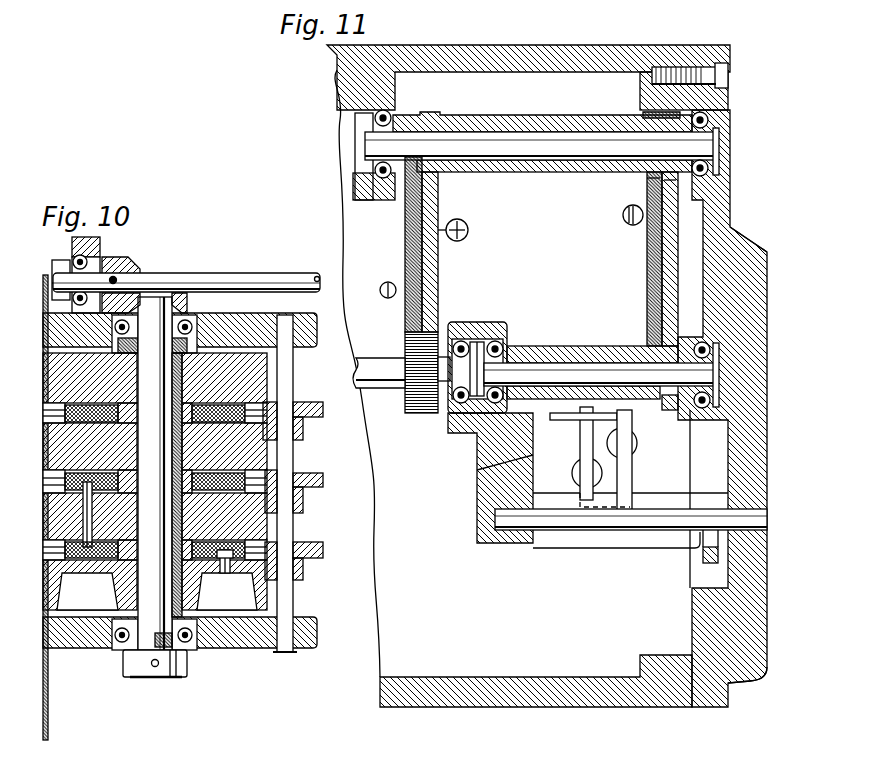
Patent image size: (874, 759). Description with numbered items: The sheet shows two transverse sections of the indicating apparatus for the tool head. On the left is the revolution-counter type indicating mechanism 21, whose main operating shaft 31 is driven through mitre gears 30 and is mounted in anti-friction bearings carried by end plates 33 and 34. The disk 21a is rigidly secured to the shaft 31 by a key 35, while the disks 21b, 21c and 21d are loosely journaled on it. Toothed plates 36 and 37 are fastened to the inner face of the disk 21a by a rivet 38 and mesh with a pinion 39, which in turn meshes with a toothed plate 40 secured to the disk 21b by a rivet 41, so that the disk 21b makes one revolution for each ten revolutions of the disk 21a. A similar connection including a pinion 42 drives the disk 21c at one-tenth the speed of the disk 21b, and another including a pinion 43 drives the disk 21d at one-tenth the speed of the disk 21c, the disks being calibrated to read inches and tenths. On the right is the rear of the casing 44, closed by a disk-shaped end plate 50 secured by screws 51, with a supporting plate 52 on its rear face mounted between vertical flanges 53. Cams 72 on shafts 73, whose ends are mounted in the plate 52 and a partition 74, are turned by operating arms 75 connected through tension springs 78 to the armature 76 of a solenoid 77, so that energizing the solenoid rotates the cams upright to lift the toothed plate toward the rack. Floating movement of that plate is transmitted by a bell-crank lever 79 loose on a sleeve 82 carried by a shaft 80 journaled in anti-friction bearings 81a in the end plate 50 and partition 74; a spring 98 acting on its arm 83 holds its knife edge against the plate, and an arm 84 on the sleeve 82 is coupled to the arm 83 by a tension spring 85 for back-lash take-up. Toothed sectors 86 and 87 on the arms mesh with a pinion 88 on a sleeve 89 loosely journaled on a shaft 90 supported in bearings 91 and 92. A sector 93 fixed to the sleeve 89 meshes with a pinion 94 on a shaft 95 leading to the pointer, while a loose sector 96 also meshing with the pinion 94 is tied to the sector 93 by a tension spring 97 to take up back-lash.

In FIG. 10, the indicating mechanism 21 is at (188, 268).
In FIG. 10, the mitre gears 30 is at (141, 264).
In FIG. 10, the end plate 34 is at (238, 323).
In FIG. 10, the end plate 33 is at (232, 647).
In FIG. 10, the disk 21a is at (56, 591).
In FIG. 10, the disk 21b is at (50, 519).
In FIG. 10, the disk 21c is at (56, 446).
In FIG. 10, the disk 21d is at (58, 380).
In FIG. 10, the main operating shaft 31 is at (141, 598).
In FIG. 10, the key 35 is at (170, 598).
In FIG. 10, the toothed plate 36 is at (66, 560).
In FIG. 10, the toothed plate 37 is at (50, 550).
In FIG. 10, the rivet 38 is at (227, 591).
In FIG. 10, the pinion 39 is at (308, 561).
In FIG. 10, the toothed plate 40 is at (228, 549).
In FIG. 10, the rivet 41 is at (93, 516).
In FIG. 10, the pinion 42 is at (320, 477).
In FIG. 10, the pinion 43 is at (305, 403).
In FIG. 11, the casing 44 is at (540, 682).
In FIG. 11, the end plate 50 is at (730, 172).
In FIG. 11, the screws 51 is at (729, 76).
In FIG. 11, the supporting plate 52 is at (762, 318).
In FIG. 11, the vertical flanges 53 is at (757, 250).
In FIG. 11, the cams 72 is at (710, 564).
In FIG. 11, the shafts 73 is at (650, 492).
In FIG. 11, the partition 74 is at (478, 485).
In FIG. 11, the operating arms 75 is at (580, 441).
In FIG. 11, the armature 76 is at (578, 496).
In FIG. 11, the solenoid 77 is at (596, 534).
In FIG. 11, the tension springs 78 is at (575, 466).
In FIG. 11, the bell-crank lever 79 is at (668, 411).
In FIG. 11, the shaft 80 is at (567, 362).
In FIG. 11, the anti-friction bearings 81a is at (506, 347).
In FIG. 11, the sleeve 82 is at (610, 353).
In FIG. 11, the arm 83 is at (648, 266).
In FIG. 11, the arm 84 is at (648, 283).
In FIG. 11, the tension spring 85 is at (624, 221).
In FIG. 11, the toothed sector 86 is at (648, 179).
In FIG. 11, the toothed sector 87 is at (666, 181).
In FIG. 11, the pinion 88 is at (650, 114).
In FIG. 11, the sleeve 89 is at (567, 128).
In FIG. 11, the shaft 90 is at (489, 134).
In FIG. 11, the anti-friction bearing 91 is at (391, 114).
In FIG. 11, the anti-friction bearing 92 is at (731, 110).
In FIG. 11, the toothed sector 93 is at (439, 197).
In FIG. 11, the pinion 94 is at (423, 414).
In FIG. 11, the shaft 95 is at (383, 362).
In FIG. 11, the sector 96 is at (405, 231).
In FIG. 11, the tension spring 97 is at (387, 282).
In FIG. 11, the spring 98 is at (467, 230).